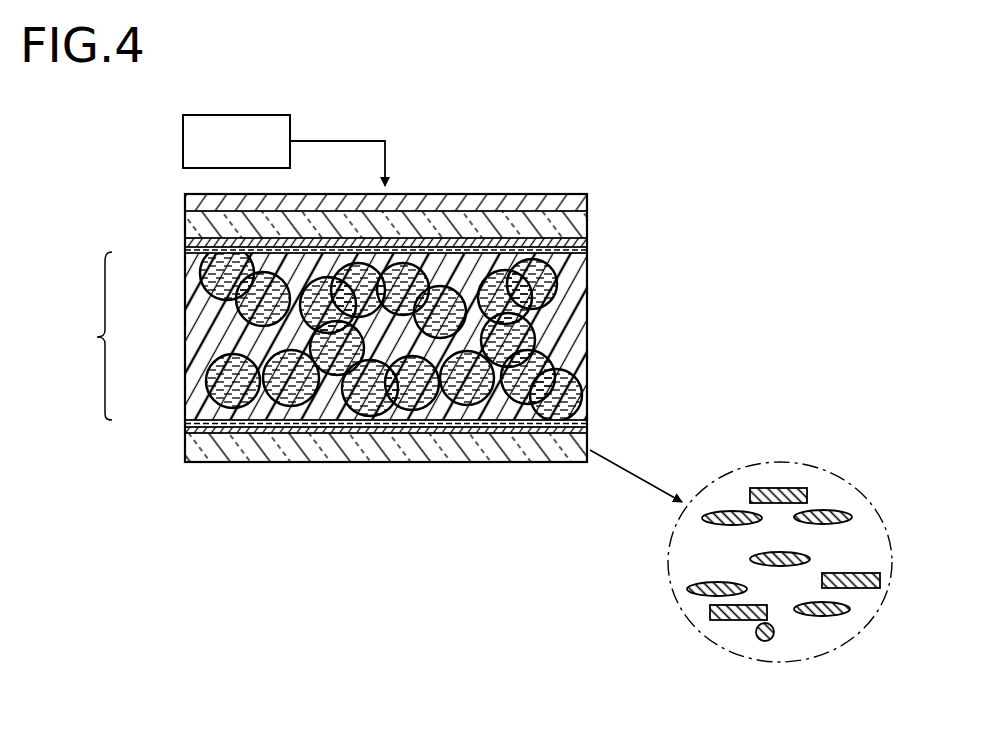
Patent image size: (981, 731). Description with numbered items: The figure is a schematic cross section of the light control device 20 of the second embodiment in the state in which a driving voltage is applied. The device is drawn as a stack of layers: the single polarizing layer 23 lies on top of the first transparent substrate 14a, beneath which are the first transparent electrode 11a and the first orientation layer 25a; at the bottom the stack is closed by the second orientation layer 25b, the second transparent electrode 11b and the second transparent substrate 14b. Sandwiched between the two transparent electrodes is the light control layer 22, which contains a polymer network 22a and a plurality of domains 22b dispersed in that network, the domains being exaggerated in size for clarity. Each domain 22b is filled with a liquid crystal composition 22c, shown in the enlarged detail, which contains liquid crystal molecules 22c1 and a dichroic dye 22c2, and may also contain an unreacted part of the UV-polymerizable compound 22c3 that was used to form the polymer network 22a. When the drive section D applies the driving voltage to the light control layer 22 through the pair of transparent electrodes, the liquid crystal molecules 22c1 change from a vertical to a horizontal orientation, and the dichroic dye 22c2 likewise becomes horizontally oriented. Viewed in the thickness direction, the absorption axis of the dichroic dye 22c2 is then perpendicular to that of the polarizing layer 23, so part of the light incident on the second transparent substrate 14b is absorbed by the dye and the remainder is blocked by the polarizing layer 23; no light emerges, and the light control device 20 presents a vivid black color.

The drive section D is at (183, 140).
The light control device 20 is at (710, 187).
The polarizing layer 23 is at (185, 203).
The first transparent substrate 14a is at (587, 225).
The first transparent electrode 11a is at (185, 242).
The first orientation layer 25a is at (587, 250).
The light control layer 22 is at (88, 336).
The polymer network 22a is at (587, 320).
The domain 22b is at (206, 282).
The liquid crystal composition 22c is at (208, 377).
The liquid crystal molecules 22c1 is at (733, 511).
The dichroic dye 22c2 is at (781, 488).
The UV-polymerizable compound 22c3 is at (765, 641).
The second orientation layer 25b is at (587, 423).
The second transparent electrode 11b is at (185, 432).
The second transparent substrate 14b is at (587, 445).